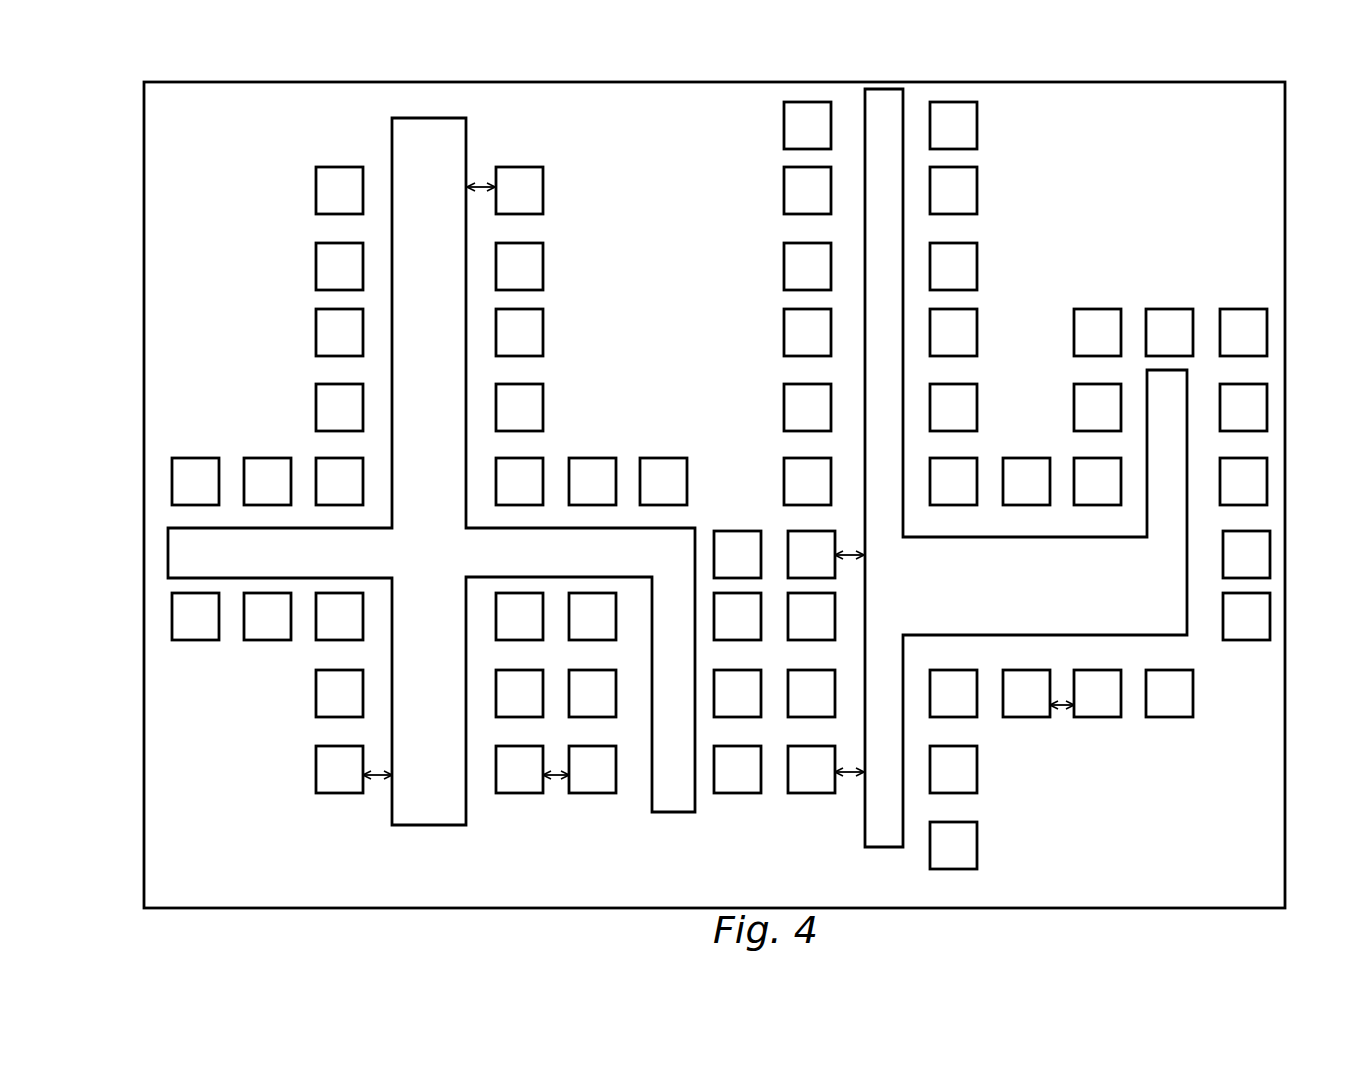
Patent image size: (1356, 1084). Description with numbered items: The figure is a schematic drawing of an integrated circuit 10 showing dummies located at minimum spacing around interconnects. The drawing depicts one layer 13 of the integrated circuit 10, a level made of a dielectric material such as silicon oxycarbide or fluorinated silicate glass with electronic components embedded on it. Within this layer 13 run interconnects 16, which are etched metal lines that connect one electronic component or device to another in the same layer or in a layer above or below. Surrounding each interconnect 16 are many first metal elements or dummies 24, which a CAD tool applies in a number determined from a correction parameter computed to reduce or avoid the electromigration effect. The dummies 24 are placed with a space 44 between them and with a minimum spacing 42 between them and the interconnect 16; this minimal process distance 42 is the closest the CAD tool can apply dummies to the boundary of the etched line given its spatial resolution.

The integrated circuit 10 is at (144, 292).
The layer 13 is at (202, 150).
The interconnect 16 is at (391, 155).
The dummies 24 is at (314, 326).
The minimal process distance 42 is at (482, 186).
The space 44 is at (557, 778).